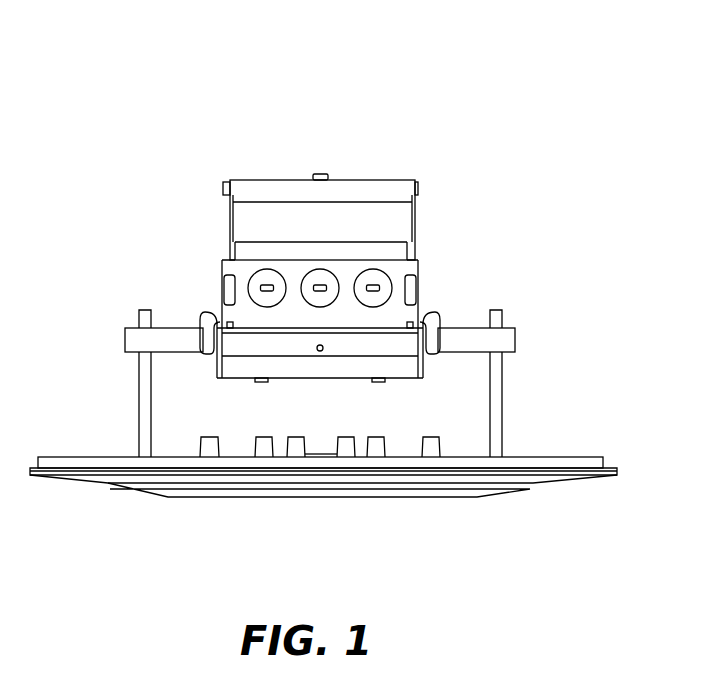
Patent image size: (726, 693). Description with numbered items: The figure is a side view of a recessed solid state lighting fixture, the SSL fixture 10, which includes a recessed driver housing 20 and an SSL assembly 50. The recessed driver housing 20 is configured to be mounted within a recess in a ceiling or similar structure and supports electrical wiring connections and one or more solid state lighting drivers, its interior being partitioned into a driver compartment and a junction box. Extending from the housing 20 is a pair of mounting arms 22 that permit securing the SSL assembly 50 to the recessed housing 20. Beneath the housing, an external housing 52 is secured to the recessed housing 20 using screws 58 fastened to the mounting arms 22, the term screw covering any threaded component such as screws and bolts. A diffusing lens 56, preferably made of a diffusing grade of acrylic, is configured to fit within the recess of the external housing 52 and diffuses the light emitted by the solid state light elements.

The SSL fixture 10 is at (466, 88).
The recessed driver housing 20 is at (428, 228).
The mounting arms 22 is at (187, 328).
The SSL assembly 50 is at (548, 492).
The external housing 52 is at (73, 483).
The diffusing lens 56 is at (340, 498).
The screws 58 is at (138, 425).